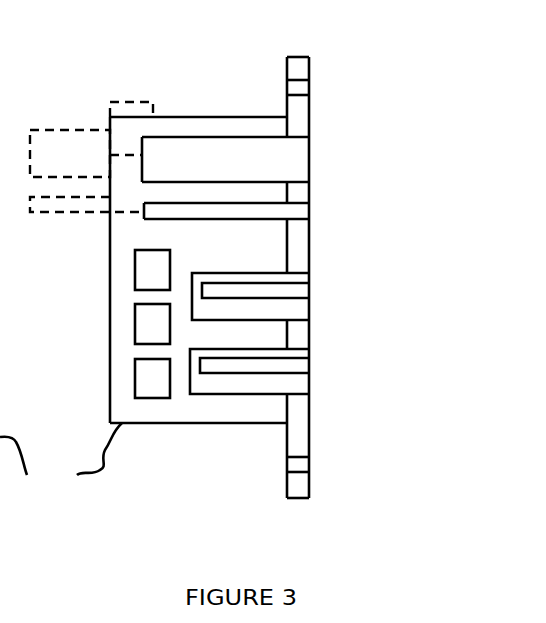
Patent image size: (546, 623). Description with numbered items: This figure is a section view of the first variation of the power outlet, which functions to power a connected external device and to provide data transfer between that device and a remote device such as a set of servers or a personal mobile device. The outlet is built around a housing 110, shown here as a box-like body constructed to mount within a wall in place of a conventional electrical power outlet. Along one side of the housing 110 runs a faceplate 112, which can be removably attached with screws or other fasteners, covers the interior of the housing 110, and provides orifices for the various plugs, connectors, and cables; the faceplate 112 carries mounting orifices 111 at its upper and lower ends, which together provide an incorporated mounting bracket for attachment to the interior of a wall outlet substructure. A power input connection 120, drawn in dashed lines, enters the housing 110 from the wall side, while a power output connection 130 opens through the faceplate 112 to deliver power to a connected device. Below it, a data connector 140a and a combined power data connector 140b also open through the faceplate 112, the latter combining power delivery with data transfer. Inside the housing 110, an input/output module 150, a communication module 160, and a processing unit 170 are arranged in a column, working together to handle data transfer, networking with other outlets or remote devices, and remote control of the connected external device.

The housing 110 is at (143, 307).
The mounting orifices 111 is at (307, 71).
The faceplate 112 is at (324, 248).
The power input connection 120 is at (80, 116).
The power output connection 130 is at (324, 157).
The data connector 140a is at (324, 295).
The combined power data connector 140b is at (339, 375).
The input/output module 150 is at (119, 281).
The communication module 160 is at (119, 328).
The processing unit 170 is at (119, 387).